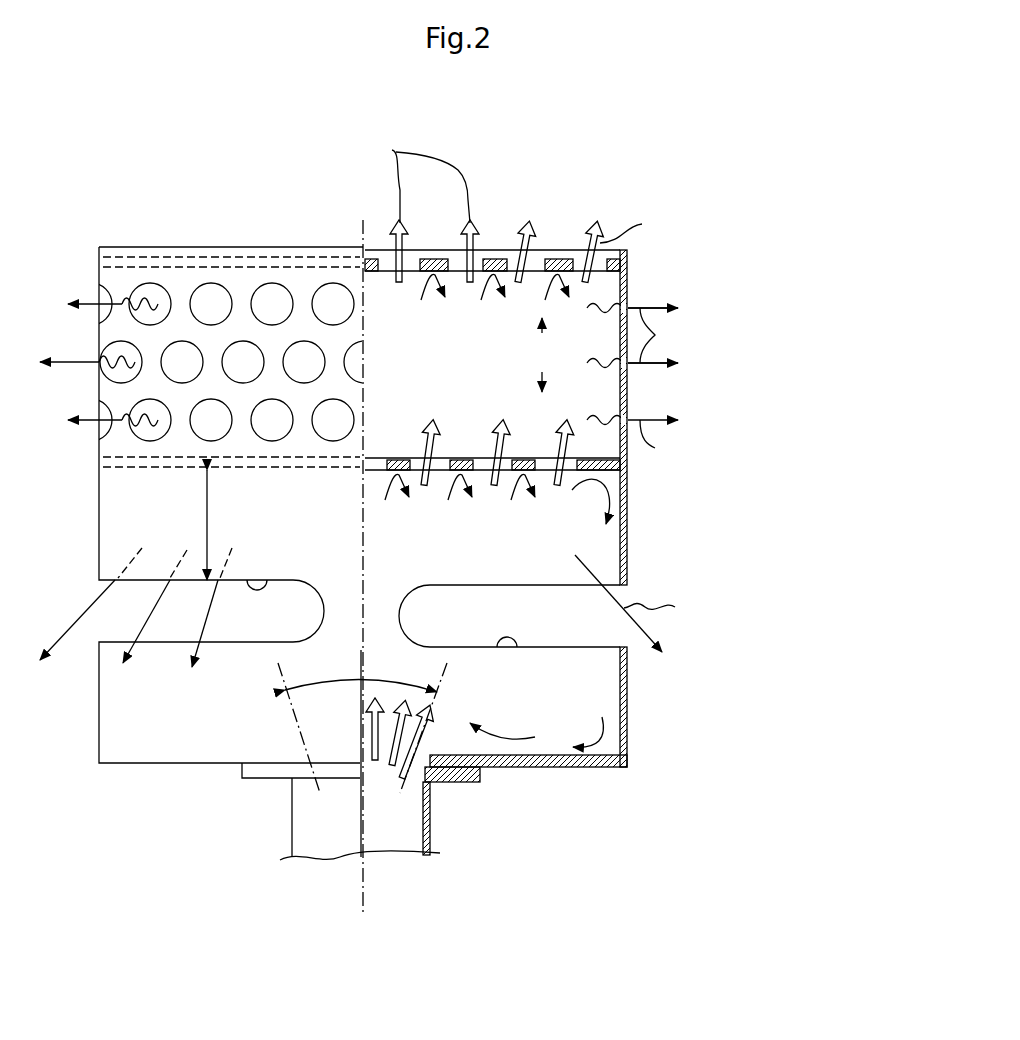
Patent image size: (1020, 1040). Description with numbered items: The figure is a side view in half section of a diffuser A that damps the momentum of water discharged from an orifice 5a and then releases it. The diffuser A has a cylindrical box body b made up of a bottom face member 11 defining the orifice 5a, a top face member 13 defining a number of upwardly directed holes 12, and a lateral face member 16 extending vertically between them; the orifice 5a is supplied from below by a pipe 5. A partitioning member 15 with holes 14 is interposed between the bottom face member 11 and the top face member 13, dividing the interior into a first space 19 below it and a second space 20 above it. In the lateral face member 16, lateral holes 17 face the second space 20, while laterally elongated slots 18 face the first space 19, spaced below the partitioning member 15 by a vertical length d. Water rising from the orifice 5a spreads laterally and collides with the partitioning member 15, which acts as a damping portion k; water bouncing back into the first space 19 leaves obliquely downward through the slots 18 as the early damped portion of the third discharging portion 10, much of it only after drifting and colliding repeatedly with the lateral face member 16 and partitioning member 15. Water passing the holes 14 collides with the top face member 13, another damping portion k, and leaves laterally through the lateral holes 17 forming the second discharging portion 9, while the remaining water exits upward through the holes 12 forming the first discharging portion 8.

The diffuser A is at (195, 180).
The lateral holes 17 is at (208, 292).
The second discharging portion 9 is at (690, 369).
The top face member 13 is at (503, 252).
The first discharging portion 8 is at (528, 196).
The upwardly directed holes 12 is at (450, 252).
The second space 20 is at (417, 337).
The damping portion k is at (542, 355).
The partitioning member 15 is at (466, 458).
The holes 14 is at (418, 458).
The lateral face member 16 is at (628, 558).
The cylindrical box body b is at (632, 513).
The first space 19 is at (417, 550).
The laterally elongated slots 18 is at (268, 580).
The third discharging portion 10 is at (677, 640).
The bottom face member 11 is at (562, 768).
The orifice 5a is at (387, 787).
The supply pipe 5 is at (313, 827).
The vertical length d is at (207, 520).